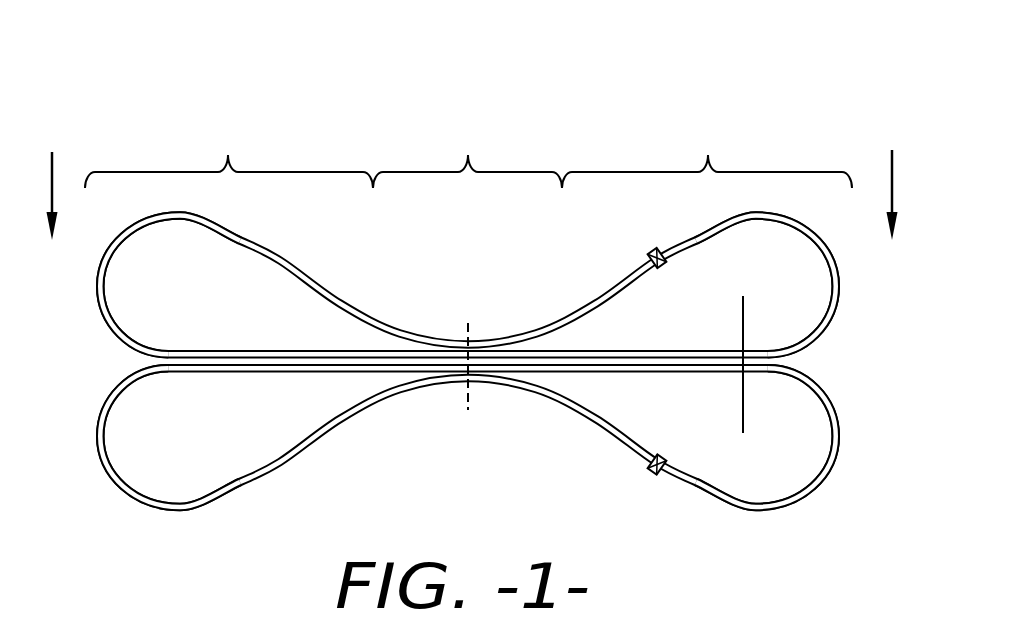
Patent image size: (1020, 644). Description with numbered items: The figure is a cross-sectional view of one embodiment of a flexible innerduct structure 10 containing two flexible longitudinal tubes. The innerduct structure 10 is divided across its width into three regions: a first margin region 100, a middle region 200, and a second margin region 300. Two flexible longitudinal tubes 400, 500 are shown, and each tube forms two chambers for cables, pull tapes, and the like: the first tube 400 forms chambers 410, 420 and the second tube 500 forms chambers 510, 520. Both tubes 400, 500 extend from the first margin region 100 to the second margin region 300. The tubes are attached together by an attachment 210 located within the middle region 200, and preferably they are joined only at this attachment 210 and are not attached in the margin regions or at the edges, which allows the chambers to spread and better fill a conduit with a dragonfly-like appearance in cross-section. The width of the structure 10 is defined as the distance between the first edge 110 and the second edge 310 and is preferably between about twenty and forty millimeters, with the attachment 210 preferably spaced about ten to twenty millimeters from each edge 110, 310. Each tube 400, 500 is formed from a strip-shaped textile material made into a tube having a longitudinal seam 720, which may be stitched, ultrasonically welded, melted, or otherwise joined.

The innerduct structure 10 is at (502, 268).
The first margin region 100 is at (229, 152).
The first edge 110 is at (53, 177).
The middle region 200 is at (467, 154).
The attachment 210 is at (468, 395).
The second margin region 300 is at (707, 153).
The second edge 310 is at (893, 174).
The flexible longitudinal tube 400 is at (502, 285).
The chamber 410 is at (210, 299).
The chamber 420 is at (773, 299).
The flexible longitudinal tube 500 is at (502, 444).
The chamber 510 is at (212, 453).
The chamber 520 is at (775, 455).
The seam 720 is at (651, 252).